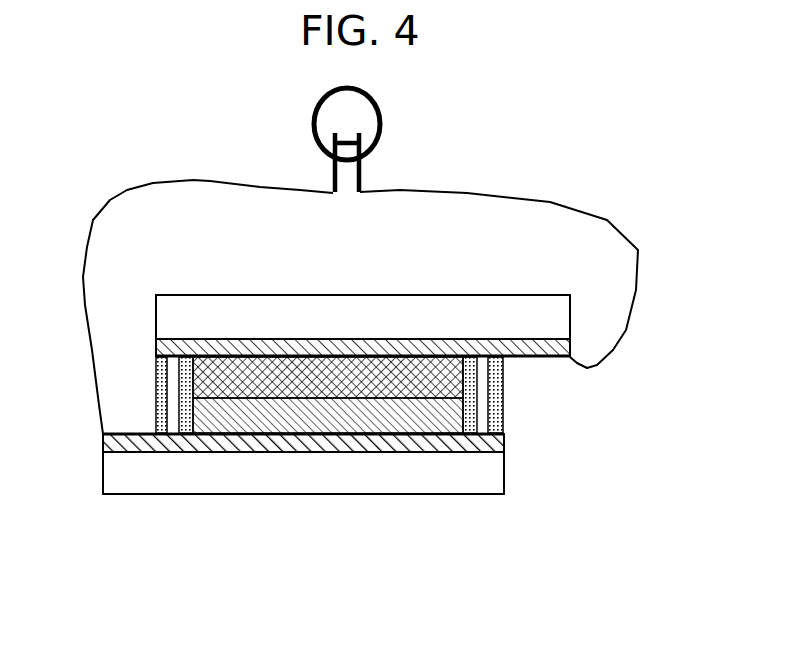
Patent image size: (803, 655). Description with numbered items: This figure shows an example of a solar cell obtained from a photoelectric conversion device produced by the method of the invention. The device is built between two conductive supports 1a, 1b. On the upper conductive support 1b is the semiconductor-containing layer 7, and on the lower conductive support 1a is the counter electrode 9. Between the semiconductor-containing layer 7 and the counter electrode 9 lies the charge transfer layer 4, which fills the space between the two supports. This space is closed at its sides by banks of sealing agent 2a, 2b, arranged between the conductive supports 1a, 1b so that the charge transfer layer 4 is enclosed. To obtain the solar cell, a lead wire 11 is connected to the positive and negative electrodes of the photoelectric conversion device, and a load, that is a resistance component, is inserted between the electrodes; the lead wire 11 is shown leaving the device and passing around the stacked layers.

The lead wire 11 is at (585, 205).
The conductive support 1b is at (432, 340).
The semiconductor-containing layer 7 is at (472, 340).
The bank of sealing agent 2a is at (187, 398).
The bank of sealing agent 2b is at (160, 417).
The charge transfer layer 4 is at (430, 413).
The counter electrode 9 is at (457, 452).
The conductive support 1a is at (395, 452).